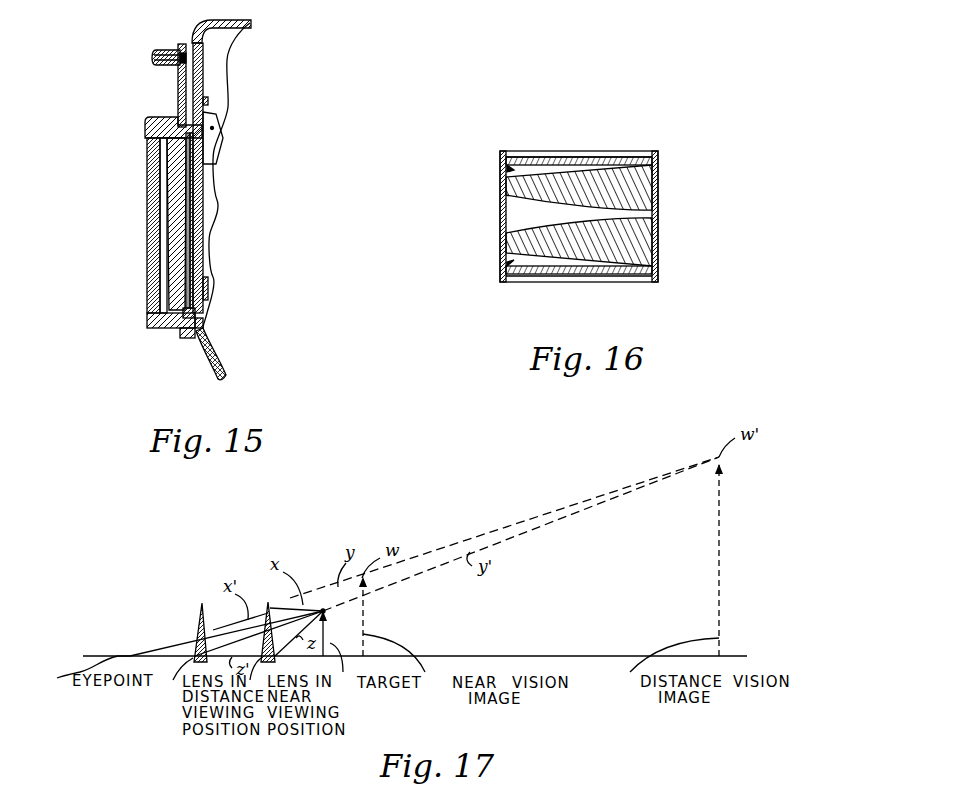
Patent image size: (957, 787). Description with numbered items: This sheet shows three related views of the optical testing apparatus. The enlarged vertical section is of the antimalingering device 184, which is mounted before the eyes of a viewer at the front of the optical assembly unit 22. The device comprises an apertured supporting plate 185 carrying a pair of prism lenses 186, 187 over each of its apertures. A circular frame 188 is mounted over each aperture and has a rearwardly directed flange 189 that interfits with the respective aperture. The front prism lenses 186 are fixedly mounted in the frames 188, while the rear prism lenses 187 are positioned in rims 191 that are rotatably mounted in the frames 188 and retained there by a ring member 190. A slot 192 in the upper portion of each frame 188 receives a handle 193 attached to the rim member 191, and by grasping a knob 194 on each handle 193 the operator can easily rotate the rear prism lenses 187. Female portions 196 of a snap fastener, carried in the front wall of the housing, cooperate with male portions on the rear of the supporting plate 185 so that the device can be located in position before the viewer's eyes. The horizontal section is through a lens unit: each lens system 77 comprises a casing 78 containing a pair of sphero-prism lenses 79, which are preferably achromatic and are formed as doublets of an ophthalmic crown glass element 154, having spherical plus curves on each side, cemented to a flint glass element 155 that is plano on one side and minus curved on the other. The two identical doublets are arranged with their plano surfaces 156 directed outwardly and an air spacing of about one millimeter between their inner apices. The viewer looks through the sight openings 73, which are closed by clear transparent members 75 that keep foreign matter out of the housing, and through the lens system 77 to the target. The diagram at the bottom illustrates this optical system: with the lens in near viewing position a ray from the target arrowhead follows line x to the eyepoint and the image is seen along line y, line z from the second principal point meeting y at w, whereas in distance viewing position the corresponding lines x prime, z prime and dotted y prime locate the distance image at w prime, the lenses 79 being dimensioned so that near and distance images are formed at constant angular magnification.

In FIG. 15, the optical assembly unit 22 is at (217, 377).
In FIG. 15, the sight openings 73 is at (193, 260).
In FIG. 15, the clear transparent members 75 is at (203, 240).
In FIG. 16, the lens system 77 is at (530, 215).
In FIG. 16, the casing 78 is at (520, 232).
In FIG. 16, the sphero-prism lenses 79 is at (508, 168).
In FIG. 16, the ophthalmic crown glass element 154 is at (630, 194).
In FIG. 16, the flint glass element 155 is at (656, 162).
In FIG. 16, the plano surfaces 156 is at (545, 152).
In FIG. 15, the antimalingering device 184 is at (145, 268).
In FIG. 15, the apertured supporting plate 185 is at (204, 64).
In FIG. 15, the front prism lenses 186 is at (148, 207).
In FIG. 15, the rear prism lenses 187 is at (184, 198).
In FIG. 15, the circular frame 188 is at (157, 328).
In FIG. 15, the rearwardly directed flange 189 is at (205, 100).
In FIG. 15, the ring member 190 is at (204, 313).
In FIG. 15, the rim 191 is at (180, 330).
In FIG. 15, the slot 192 is at (170, 117).
In FIG. 15, the handle 193 is at (178, 73).
In FIG. 15, the knob 194 is at (160, 49).
In FIG. 15, the female portions of snap fastener 196 is at (210, 145).